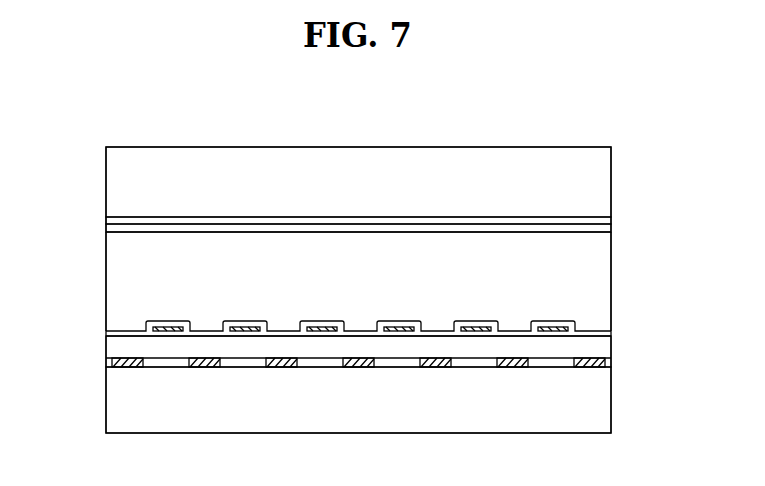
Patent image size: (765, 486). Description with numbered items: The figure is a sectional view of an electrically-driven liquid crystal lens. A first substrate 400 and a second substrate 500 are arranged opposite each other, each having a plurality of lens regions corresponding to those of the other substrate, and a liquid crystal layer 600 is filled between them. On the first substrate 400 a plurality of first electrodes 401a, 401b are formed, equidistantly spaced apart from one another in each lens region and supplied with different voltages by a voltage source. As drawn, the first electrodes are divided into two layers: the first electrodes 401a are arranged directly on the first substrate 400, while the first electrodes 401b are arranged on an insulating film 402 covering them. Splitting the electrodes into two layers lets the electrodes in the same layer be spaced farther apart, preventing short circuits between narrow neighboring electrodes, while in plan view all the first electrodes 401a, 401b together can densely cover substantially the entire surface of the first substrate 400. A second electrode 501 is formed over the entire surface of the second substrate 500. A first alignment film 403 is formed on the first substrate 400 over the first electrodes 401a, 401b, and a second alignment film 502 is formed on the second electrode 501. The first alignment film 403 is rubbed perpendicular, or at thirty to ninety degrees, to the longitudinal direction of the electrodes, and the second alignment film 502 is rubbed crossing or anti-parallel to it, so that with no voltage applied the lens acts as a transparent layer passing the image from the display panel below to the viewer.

The second substrate 500 is at (605, 173).
The second electrode 501 is at (612, 220).
The second alignment film 502 is at (612, 230).
The liquid crystal layer 600 is at (605, 275).
The first alignment film 403 is at (612, 333).
The first electrodes 401b is at (553, 328).
The insulating film 402 is at (605, 351).
The first electrodes 401a is at (110, 362).
The first substrate 400 is at (110, 402).